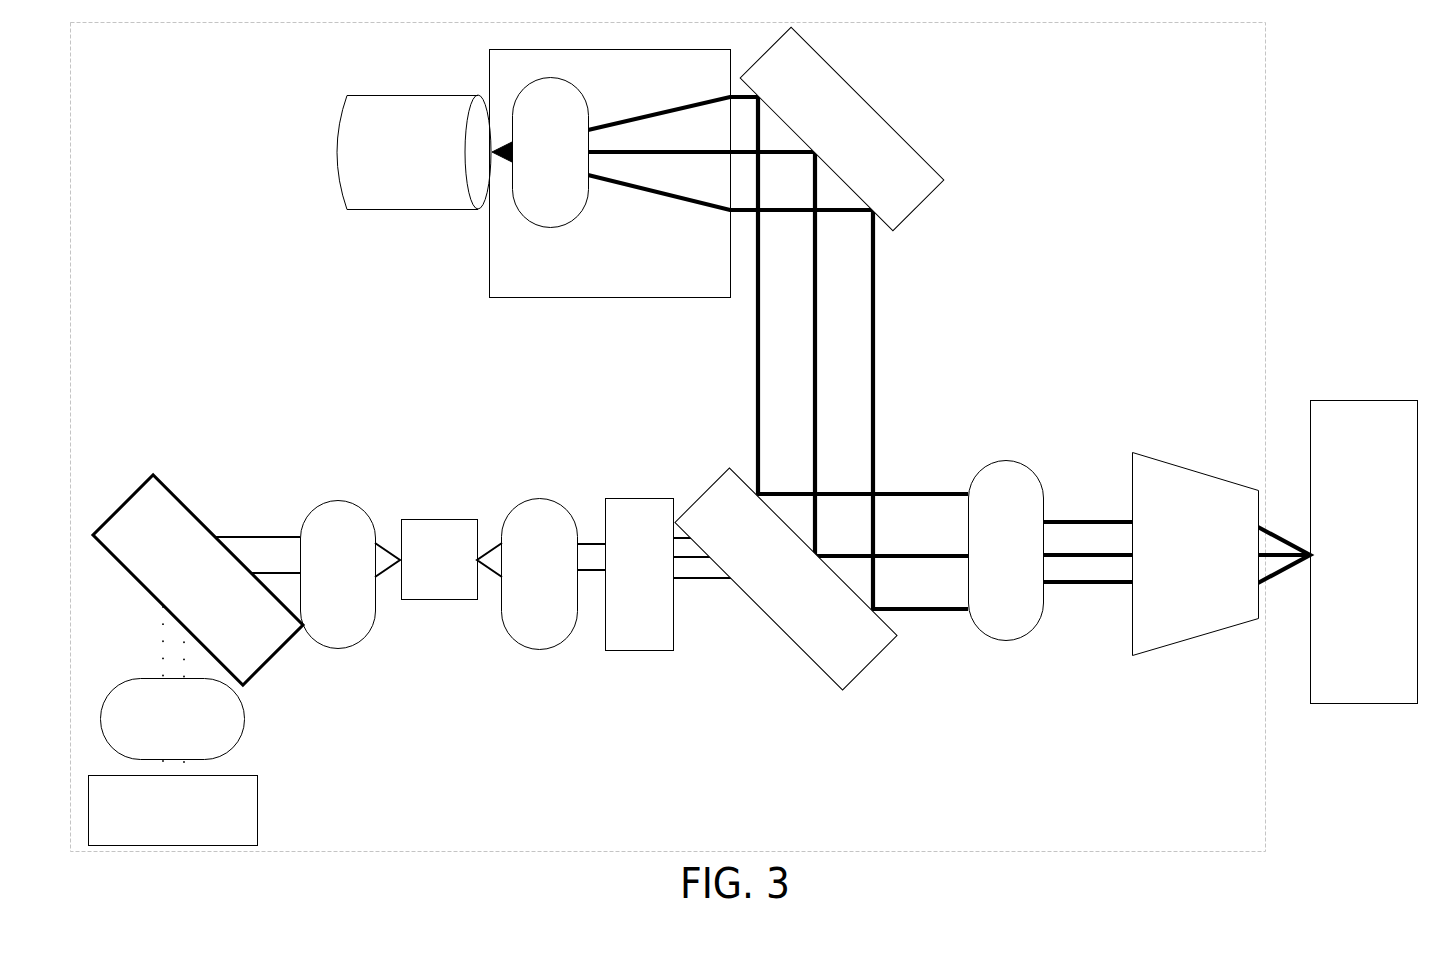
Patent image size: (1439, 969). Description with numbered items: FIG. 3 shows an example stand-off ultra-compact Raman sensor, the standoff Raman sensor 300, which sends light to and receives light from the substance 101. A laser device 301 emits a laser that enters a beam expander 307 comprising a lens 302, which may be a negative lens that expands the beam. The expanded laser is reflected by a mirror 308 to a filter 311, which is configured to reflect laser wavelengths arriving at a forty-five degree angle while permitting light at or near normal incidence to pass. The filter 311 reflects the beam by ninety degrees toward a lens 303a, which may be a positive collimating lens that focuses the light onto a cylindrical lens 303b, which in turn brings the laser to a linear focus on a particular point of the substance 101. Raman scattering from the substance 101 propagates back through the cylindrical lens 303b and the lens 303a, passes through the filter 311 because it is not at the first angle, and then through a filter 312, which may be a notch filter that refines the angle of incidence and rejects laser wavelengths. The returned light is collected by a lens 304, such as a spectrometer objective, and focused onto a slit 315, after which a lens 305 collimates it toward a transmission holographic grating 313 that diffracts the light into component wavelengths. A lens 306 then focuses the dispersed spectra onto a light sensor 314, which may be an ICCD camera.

The standoff Raman sensor 300 is at (668, 437).
The laser device 301 is at (424, 152).
The lens 302 is at (551, 153).
The beam expander 307 is at (610, 174).
The mirror 308 is at (842, 129).
The lens 303a is at (1006, 551).
The cylindrical lens 303b is at (1196, 554).
The substance 101 is at (1364, 552).
The filter 311 is at (786, 579).
The filter 312 is at (640, 575).
The lens 304 is at (540, 574).
The slit 315 is at (440, 560).
The lens 305 is at (338, 575).
The transmission holographic grating 313 is at (198, 580).
The lens 306 is at (173, 719).
The light sensor 314 is at (173, 811).